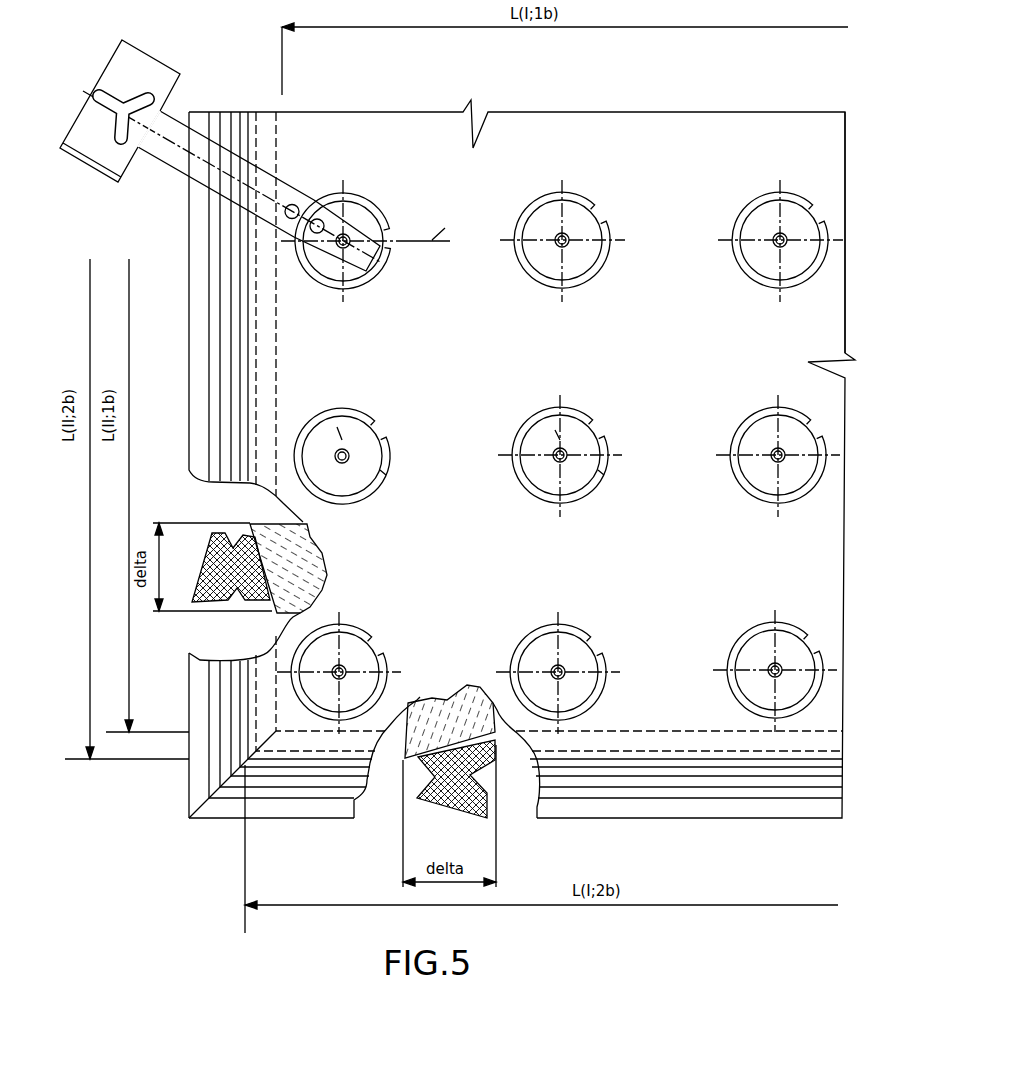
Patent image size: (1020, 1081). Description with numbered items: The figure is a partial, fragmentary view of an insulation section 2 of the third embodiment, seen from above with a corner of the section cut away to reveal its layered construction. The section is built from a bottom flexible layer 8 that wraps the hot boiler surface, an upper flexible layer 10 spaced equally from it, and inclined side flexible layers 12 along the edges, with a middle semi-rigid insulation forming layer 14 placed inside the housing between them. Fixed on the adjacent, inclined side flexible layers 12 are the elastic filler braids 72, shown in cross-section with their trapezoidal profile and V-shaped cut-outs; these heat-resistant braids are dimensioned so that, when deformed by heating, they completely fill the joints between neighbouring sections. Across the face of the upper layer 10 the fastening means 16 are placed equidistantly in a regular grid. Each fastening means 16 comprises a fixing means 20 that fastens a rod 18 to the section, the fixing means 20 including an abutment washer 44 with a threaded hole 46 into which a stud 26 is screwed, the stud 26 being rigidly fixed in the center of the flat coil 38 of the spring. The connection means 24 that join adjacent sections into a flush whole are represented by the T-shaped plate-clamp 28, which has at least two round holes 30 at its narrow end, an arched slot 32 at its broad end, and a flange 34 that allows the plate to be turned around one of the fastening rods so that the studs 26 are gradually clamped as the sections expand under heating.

The insulation section 2 is at (808, 330).
The bottom flexible layer 8 is at (276, 620).
The upper flexible layer 10 is at (622, 135).
The side flexible layer 12 is at (240, 532).
The middle semi-rigid insulation forming layer 14 is at (307, 550).
The fastening means 16 is at (377, 208).
The fastening rod 18 is at (574, 288).
The fixing means 20 is at (588, 222).
The connection means 24 is at (221, 155).
The stud 26 is at (377, 267).
The plate-clamp 28 is at (190, 163).
The round hole 30 is at (305, 198).
The arched slot 32 is at (150, 97).
The flange 34 is at (103, 178).
The flat coil 38 is at (386, 477).
The abutment washer 44 is at (337, 427).
The threaded hole 46 is at (553, 246).
The elastic filler braid 72 is at (207, 555).